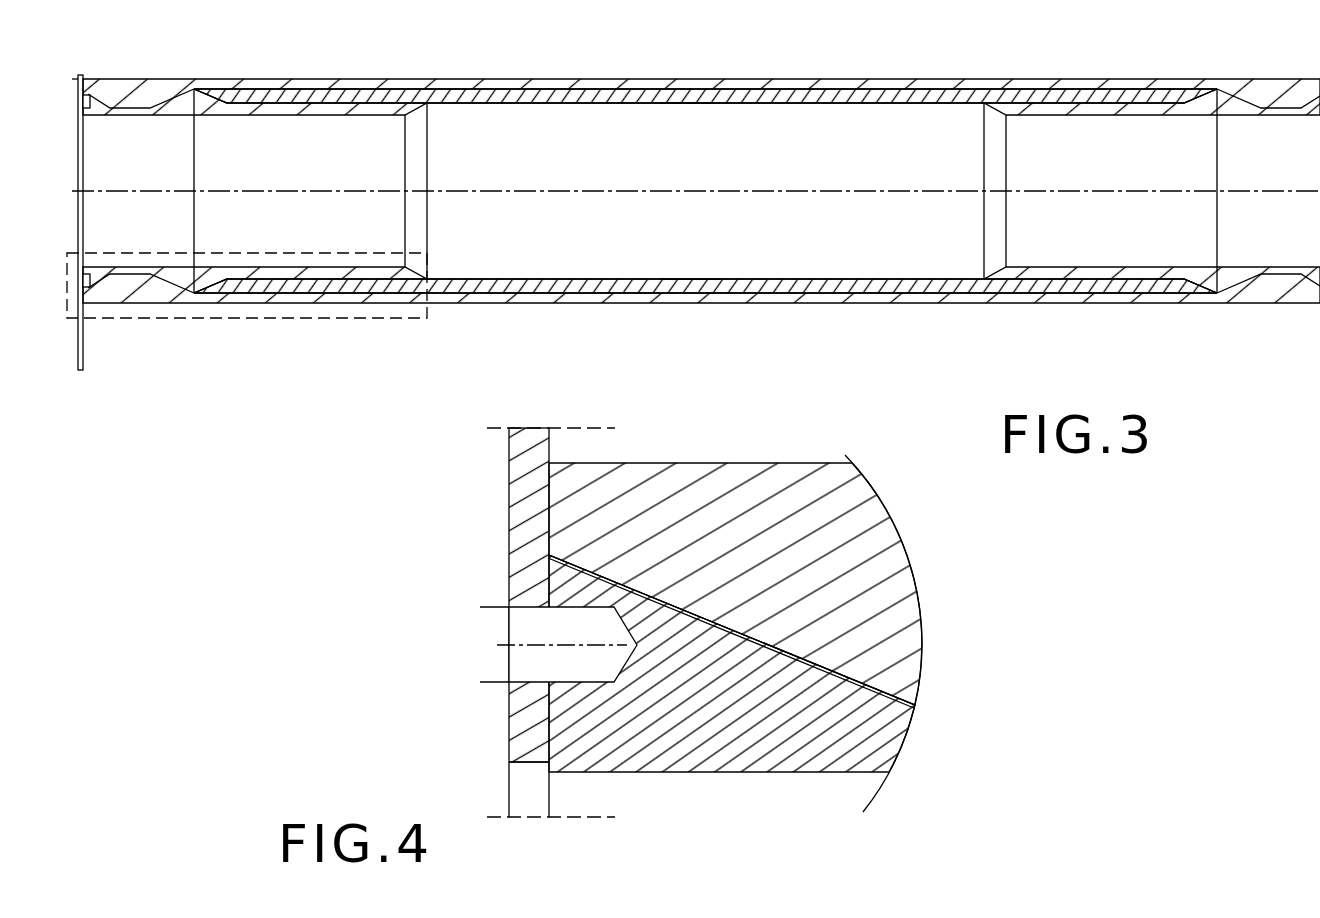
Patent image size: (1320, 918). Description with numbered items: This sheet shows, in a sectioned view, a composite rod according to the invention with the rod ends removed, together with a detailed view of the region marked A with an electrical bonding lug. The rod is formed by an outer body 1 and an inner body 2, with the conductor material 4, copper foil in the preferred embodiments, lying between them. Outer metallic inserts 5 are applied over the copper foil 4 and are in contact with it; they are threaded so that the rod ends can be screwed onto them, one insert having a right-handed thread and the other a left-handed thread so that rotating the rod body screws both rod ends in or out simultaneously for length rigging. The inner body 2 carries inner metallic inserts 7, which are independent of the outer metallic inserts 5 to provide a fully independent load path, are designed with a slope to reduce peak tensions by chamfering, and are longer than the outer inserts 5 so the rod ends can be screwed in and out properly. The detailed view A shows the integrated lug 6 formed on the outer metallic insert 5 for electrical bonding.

In FIG. 3, the outer body 1 is at (1010, 80).
In FIG. 4, the outer body 1 is at (701, 503).
In FIG. 3, the inner body 2 is at (690, 104).
In FIG. 3, the conductor material 4 is at (912, 82).
In FIG. 4, the conductor material 4 is at (862, 664).
In FIG. 3, the outer metallic insert 5 is at (172, 104).
In FIG. 4, the outer metallic insert 5 is at (687, 738).
In FIG. 4, the integrated lug 6 is at (513, 525).
In FIG. 3, the inner metallic insert 7 is at (212, 96).
In FIG. 3, the detail region A is at (368, 323).